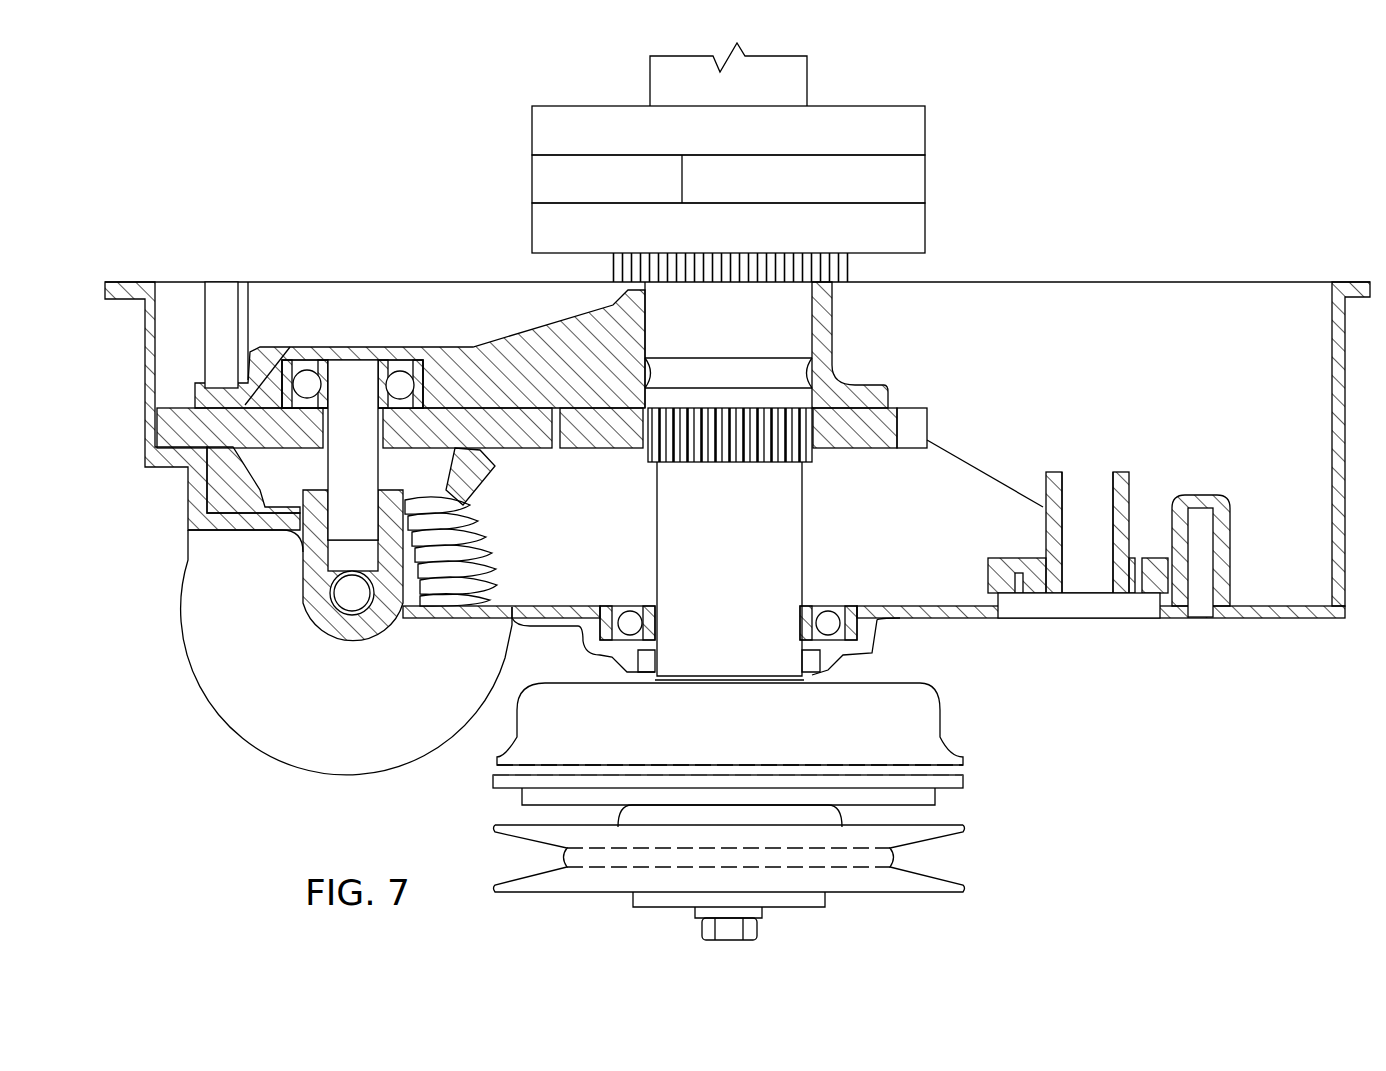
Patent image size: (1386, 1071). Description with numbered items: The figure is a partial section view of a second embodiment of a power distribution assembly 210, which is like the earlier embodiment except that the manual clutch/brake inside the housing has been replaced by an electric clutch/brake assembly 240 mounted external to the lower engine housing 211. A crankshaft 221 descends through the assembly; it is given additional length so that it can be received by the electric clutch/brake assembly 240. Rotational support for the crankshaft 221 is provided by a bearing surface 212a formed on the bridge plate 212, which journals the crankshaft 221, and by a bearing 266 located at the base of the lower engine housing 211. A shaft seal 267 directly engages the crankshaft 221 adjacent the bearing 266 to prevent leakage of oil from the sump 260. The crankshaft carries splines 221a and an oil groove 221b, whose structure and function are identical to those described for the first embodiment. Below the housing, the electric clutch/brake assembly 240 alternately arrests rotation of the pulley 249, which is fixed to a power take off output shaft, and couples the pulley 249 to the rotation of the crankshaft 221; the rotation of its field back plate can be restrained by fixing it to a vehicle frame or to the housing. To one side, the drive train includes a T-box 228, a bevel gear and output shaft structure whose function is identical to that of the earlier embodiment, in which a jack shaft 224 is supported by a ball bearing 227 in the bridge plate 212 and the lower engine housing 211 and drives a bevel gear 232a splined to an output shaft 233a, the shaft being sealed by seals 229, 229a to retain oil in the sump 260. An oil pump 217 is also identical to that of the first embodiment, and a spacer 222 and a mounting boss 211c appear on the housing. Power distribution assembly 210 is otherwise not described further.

The power distribution assembly 210 is at (272, 179).
The lower engine housing 211 is at (372, 707).
The mounting boss 211c is at (962, 455).
The bridge plate 212 is at (475, 345).
The bearing surface 212a is at (647, 305).
The oil pump 217 is at (1121, 650).
The crankshaft 221 is at (752, 553).
The splines 221a is at (753, 435).
The oil groove 221b is at (677, 372).
The spacer plate 222 is at (880, 427).
The input shaft 224 is at (372, 458).
The upper bearing 227 is at (307, 378).
The T-box 228 is at (270, 768).
The seal plate 229 is at (168, 425).
The lip seal 229a is at (257, 482).
The bevel gear 232a is at (473, 548).
The gear bearing 233a is at (352, 595).
The electric clutch/brake assembly 240 is at (982, 710).
The pulley 249 is at (938, 886).
The sump 260 is at (1272, 587).
The bearing 266 is at (630, 628).
The shaft seal 267 is at (810, 672).